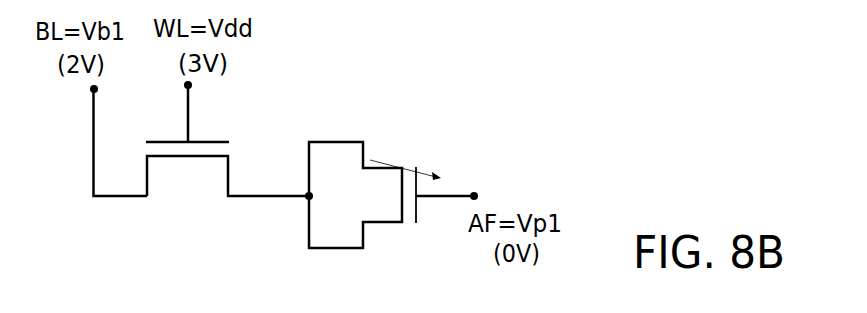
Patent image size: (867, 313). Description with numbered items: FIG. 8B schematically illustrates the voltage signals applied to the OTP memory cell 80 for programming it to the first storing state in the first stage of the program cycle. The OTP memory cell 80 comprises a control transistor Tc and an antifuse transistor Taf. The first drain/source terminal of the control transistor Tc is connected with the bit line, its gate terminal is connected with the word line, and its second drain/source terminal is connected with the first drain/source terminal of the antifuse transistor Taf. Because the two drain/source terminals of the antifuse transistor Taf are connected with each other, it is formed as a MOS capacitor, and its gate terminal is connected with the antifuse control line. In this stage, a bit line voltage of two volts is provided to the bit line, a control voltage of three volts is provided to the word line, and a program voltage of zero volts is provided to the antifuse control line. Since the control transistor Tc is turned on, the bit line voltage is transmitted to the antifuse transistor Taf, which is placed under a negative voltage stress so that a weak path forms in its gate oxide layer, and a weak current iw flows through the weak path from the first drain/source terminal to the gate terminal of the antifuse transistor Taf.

The OTP memory cell 80 is at (391, 165).
The control transistor Tc is at (227, 153).
The antifuse transistor Taf is at (391, 195).
The weak current iw is at (405, 159).